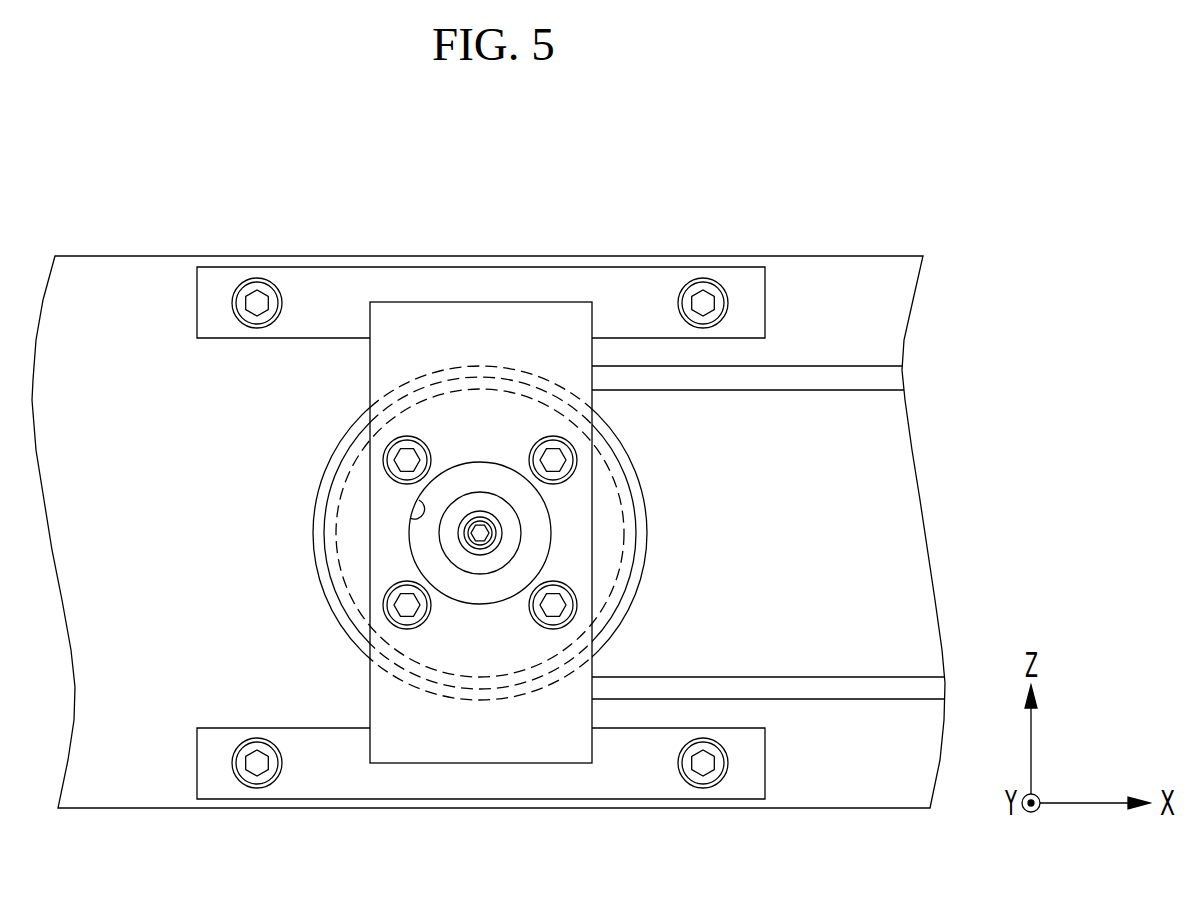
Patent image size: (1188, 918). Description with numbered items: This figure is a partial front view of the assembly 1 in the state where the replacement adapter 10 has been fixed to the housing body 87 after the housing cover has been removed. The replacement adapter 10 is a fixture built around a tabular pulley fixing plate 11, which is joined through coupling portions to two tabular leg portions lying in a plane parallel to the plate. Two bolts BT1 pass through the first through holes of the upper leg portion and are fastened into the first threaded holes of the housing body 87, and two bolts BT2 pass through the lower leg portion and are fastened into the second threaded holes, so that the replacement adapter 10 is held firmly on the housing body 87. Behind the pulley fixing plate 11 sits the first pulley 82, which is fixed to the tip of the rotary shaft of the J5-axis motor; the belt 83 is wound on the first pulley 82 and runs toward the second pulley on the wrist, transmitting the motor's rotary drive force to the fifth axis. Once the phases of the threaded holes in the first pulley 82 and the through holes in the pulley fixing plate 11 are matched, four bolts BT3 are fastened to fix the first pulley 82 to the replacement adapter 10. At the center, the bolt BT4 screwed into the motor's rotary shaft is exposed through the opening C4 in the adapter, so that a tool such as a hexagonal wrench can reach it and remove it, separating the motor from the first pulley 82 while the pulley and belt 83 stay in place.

The robot / machine assembly 1 is at (952, 163).
The replacement adapter 10 is at (575, 244).
The pulley fixing plate 11 is at (593, 408).
The first pulley 82 is at (636, 522).
The belt 83 is at (878, 377).
The housing body 87 is at (826, 256).
The bolts BT1 is at (258, 278).
The bolts BT2 is at (257, 788).
The bolts BT3 is at (383, 460).
The bolt BT4 is at (464, 533).
The opening C4 is at (410, 518).